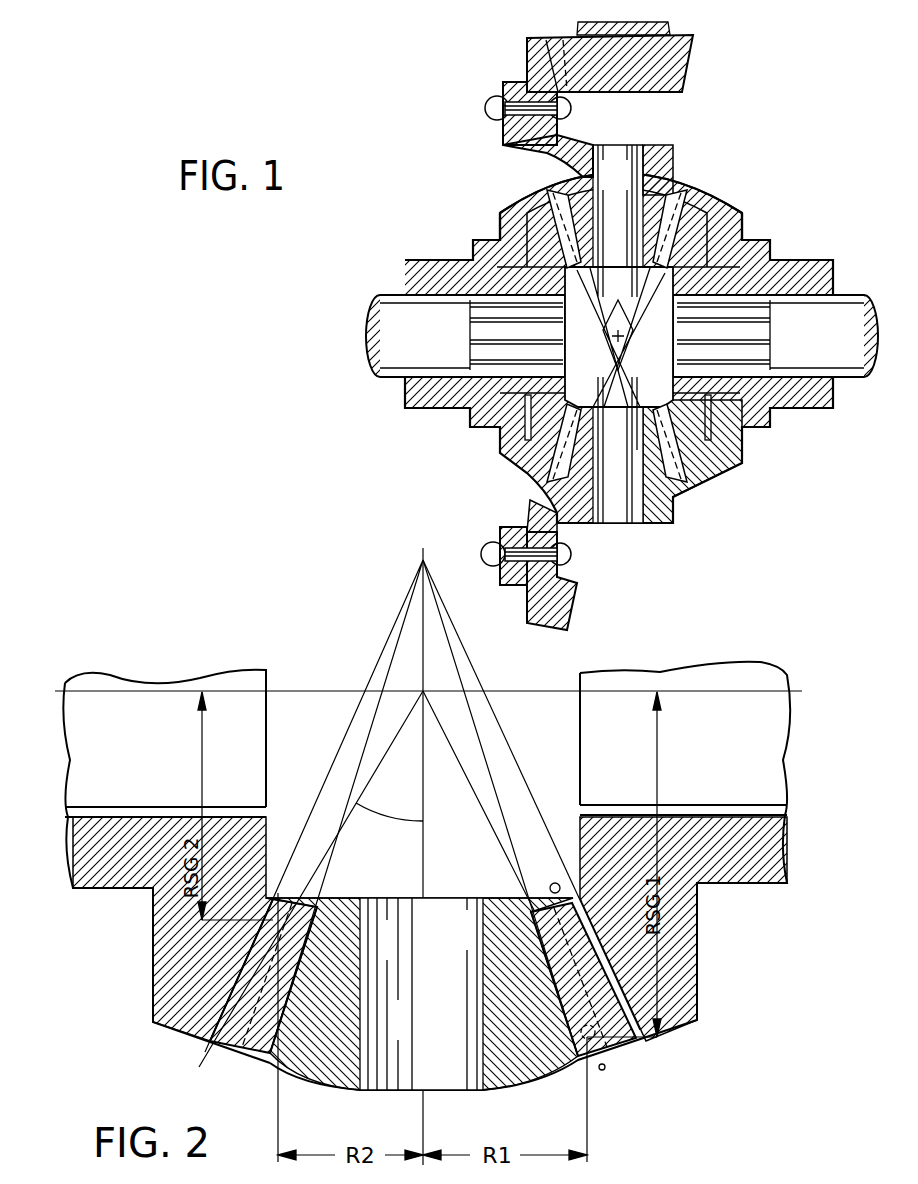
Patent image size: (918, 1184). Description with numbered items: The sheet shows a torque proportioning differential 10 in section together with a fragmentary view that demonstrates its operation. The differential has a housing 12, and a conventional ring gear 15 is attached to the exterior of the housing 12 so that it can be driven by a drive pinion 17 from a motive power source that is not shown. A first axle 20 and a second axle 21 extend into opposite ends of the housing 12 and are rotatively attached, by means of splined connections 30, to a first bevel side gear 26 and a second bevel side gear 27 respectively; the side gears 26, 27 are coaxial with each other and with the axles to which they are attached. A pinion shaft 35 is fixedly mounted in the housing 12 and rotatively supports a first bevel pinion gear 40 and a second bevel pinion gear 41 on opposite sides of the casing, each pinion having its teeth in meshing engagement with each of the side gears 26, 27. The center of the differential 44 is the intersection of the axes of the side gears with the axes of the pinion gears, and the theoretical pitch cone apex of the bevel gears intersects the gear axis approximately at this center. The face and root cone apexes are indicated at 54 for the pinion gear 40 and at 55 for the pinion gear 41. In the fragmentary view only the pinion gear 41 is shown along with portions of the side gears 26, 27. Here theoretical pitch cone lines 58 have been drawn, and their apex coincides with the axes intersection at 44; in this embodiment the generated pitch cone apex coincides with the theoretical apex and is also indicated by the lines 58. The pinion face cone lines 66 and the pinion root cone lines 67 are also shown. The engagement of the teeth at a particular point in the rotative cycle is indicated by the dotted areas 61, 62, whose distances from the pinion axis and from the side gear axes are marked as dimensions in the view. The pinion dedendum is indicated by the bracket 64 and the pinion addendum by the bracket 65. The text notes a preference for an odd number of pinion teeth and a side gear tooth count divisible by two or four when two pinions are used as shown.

In FIG. 1, the torque proportioning differential 10 is at (437, 170).
In FIG. 1, the housing 12 is at (523, 480).
In FIG. 1, the ring gear 15 is at (575, 600).
In FIG. 1, the drive pinion 17 is at (688, 66).
In FIG. 1, the first axle 20 is at (395, 378).
In FIG. 1, the second axle 21 is at (862, 380).
In FIG. 1, the first bevel side gear 26 is at (500, 228).
In FIG. 2, the first bevel side gear 26 is at (153, 918).
In FIG. 1, the second bevel side gear 27 is at (742, 230).
In FIG. 2, the second bevel side gear 27 is at (697, 912).
In FIG. 1, the splined connections 30 is at (470, 333).
In FIG. 1, the pinion shaft 35 is at (603, 184).
In FIG. 1, the first bevel pinion gear 40 is at (650, 191).
In FIG. 1, the second bevel pinion gear 41 is at (673, 500).
In FIG. 2, the second bevel pinion gear 41 is at (474, 1093).
In FIG. 1, the center of the differential 44 is at (619, 334).
In FIG. 2, the center of the differential 44 is at (423, 690).
In FIG. 1, the face and root cone apex of first pinion gear 54 is at (617, 336).
In FIG. 1, the face and root cone apex of second pinion gear 55 is at (620, 298).
In FIG. 2, the face and root cone apex of second pinion gear 55 is at (423, 560).
In FIG. 2, the theoretical pitch cone lines 58 is at (423, 821).
In FIG. 2, the area of contact 61 is at (268, 915).
In FIG. 2, the area of contact 62 is at (607, 1043).
In FIG. 2, the pinion dedendum 64 is at (602, 1070).
In FIG. 2, the pinion addendum 65 is at (555, 883).
In FIG. 2, the pinion face cone lines 66 is at (517, 765).
In FIG. 2, the pinion root cone lines 67 is at (520, 877).